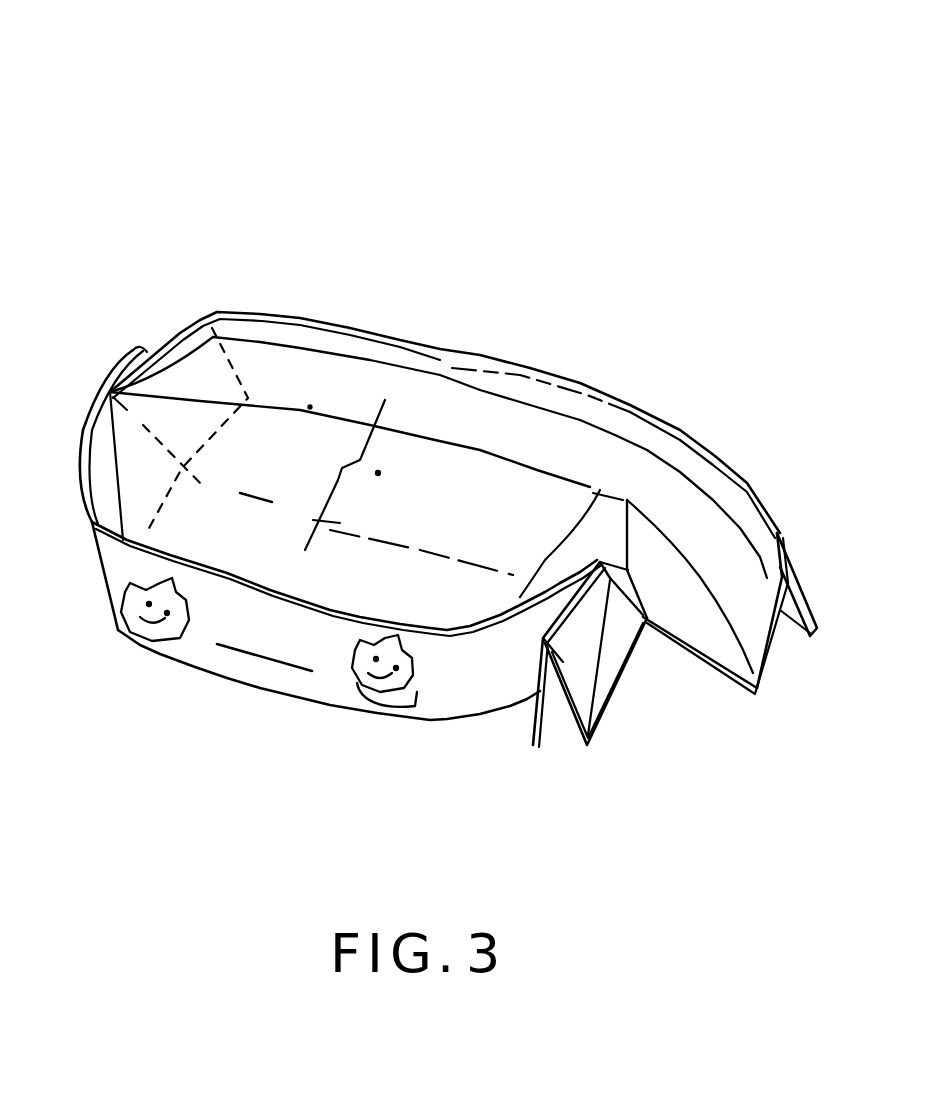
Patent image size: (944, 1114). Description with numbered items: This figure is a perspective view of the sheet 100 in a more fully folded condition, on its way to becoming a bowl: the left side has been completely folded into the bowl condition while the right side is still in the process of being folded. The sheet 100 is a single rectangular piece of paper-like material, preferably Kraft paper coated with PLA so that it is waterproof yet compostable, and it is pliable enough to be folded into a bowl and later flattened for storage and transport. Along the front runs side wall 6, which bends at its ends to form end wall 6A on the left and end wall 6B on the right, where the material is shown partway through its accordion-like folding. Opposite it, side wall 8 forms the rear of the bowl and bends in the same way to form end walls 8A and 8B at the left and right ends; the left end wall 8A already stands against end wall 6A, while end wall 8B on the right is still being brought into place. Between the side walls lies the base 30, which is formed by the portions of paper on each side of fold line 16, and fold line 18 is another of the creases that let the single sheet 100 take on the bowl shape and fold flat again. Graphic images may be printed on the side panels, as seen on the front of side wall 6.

The sheet 100 is at (707, 220).
The side wall 6 is at (313, 687).
The end wall 6A is at (100, 465).
The end wall 6B is at (503, 677).
The side wall 8 is at (485, 408).
The end wall 8A is at (197, 367).
The end wall 8B is at (707, 532).
The fold line 16 is at (255, 493).
The fold line 18 is at (310, 407).
The base 30 is at (378, 473).